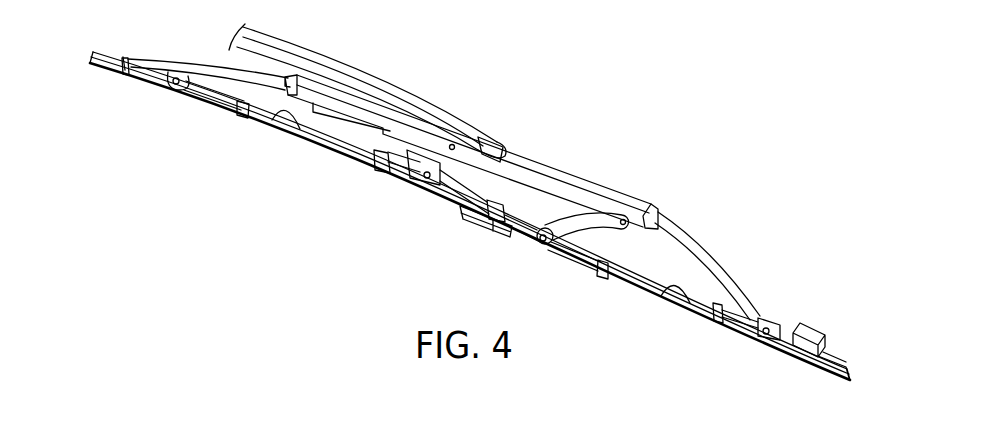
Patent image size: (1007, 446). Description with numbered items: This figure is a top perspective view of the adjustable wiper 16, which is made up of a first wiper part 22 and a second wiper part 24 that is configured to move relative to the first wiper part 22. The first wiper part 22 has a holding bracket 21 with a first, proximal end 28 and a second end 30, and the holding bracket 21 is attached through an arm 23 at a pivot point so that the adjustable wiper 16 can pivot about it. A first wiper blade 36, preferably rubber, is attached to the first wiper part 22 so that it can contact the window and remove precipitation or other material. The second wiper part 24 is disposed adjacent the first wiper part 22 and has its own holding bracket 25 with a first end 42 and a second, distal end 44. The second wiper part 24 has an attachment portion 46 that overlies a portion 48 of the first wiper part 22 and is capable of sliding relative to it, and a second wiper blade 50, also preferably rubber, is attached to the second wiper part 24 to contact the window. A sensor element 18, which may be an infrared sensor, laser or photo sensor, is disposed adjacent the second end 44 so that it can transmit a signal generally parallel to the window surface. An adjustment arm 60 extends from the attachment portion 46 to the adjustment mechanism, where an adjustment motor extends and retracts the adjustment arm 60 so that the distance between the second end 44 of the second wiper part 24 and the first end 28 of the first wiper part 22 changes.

The adjustable wiper 16 is at (515, 139).
The sensor element 18 is at (807, 333).
The holding bracket 21 is at (231, 80).
The first wiper part 22 is at (288, 112).
The arm 23 is at (203, 70).
The second wiper part 24 is at (663, 283).
The holding bracket 25 is at (715, 258).
The first end 28 is at (97, 67).
The second end 30 is at (510, 207).
The first wiper blade 36 is at (315, 152).
The first end 42 is at (460, 213).
The second end 44 is at (837, 372).
The attachment portion 46 is at (582, 183).
The portion 48 is at (353, 130).
The second wiper blade 50 is at (627, 292).
The adjustment arm 60 is at (368, 72).